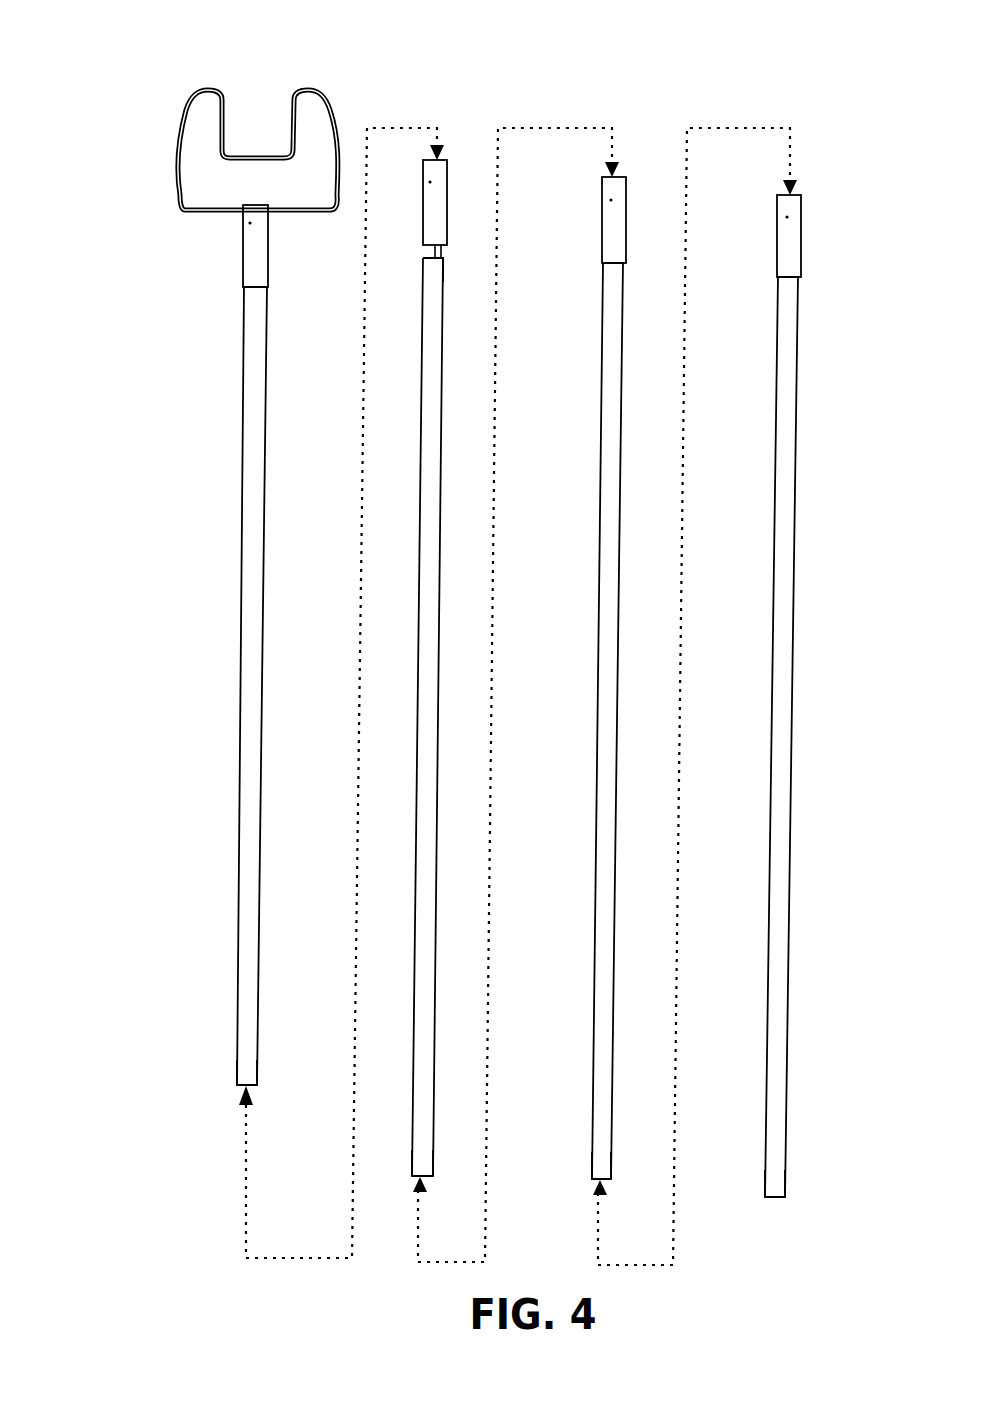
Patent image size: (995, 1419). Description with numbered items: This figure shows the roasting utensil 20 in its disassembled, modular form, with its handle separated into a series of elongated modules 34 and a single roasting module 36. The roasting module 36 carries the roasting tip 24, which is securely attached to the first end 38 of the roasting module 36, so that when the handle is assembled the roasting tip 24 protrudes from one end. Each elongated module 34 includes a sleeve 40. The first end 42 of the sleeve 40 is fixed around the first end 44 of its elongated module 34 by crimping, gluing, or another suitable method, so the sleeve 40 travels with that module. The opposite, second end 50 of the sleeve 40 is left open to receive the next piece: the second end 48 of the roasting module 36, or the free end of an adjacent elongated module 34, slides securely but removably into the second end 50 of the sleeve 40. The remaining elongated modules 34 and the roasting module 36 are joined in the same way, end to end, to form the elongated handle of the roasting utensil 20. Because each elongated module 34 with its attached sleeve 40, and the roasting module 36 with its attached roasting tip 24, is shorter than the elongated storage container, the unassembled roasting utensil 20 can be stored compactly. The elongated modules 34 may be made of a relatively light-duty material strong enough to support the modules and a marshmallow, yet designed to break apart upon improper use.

The roasting utensil 20 is at (180, 66).
The roasting tip 24 is at (178, 157).
The elongated module 34 is at (440, 460).
The roasting module 36 is at (242, 490).
The first end of roasting module 38 is at (258, 204).
The sleeve 40 is at (412, 1177).
The first end of sleeve 42 is at (443, 252).
The first end of elongated module 44 is at (430, 257).
The second end of roasting module 48 is at (238, 928).
The second end of sleeve 50 is at (442, 154).